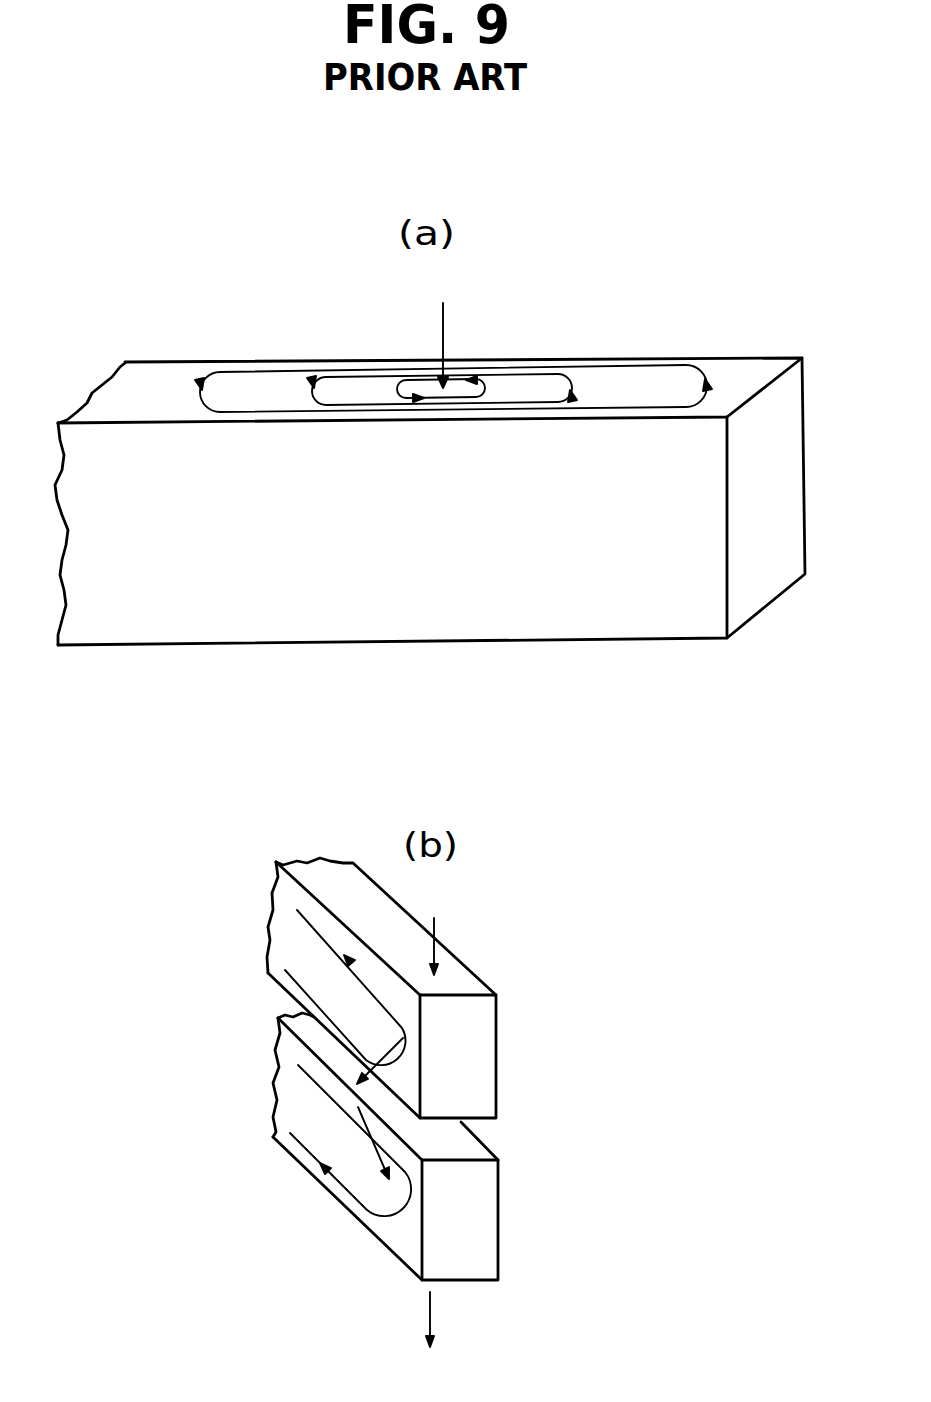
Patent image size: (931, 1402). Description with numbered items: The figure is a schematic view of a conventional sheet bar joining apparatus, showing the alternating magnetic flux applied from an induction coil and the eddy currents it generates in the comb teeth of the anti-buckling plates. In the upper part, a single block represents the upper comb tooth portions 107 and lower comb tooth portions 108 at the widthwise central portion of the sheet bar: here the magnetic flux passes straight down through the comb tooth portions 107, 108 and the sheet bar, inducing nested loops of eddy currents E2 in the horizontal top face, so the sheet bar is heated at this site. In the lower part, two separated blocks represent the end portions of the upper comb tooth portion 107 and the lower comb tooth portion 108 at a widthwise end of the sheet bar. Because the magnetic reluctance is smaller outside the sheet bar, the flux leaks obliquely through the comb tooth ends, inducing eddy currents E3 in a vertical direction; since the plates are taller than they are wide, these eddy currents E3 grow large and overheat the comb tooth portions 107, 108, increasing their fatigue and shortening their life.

The upper comb tooth portion 107 is at (738, 368).
The lower comb tooth portion 108 is at (487, 1208).
The eddy currents E2 is at (621, 363).
The eddy currents E3 is at (327, 938).